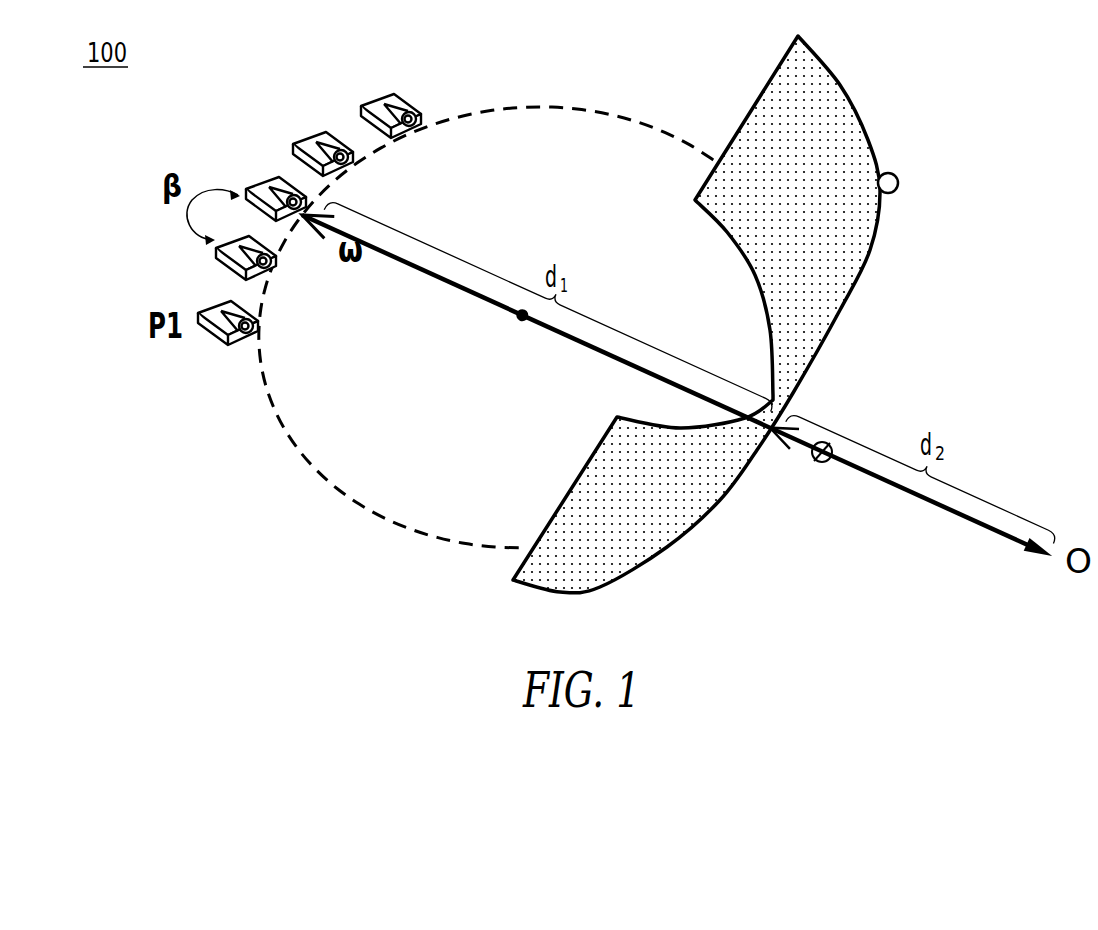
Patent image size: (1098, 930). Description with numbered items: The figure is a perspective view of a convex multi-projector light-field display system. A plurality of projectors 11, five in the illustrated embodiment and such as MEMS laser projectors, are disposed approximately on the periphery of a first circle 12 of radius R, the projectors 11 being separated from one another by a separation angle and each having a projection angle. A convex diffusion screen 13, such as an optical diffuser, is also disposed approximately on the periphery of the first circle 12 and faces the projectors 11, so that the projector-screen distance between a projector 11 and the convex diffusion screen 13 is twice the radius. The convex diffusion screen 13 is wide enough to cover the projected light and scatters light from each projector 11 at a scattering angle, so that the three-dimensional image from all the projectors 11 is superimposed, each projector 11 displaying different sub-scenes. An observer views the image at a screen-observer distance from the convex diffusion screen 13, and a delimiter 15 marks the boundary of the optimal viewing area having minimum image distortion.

The projector 11 is at (217, 343).
The first circle 12 is at (559, 107).
The convex diffusion screen 13 is at (632, 583).
The delimiter 15 is at (898, 183).